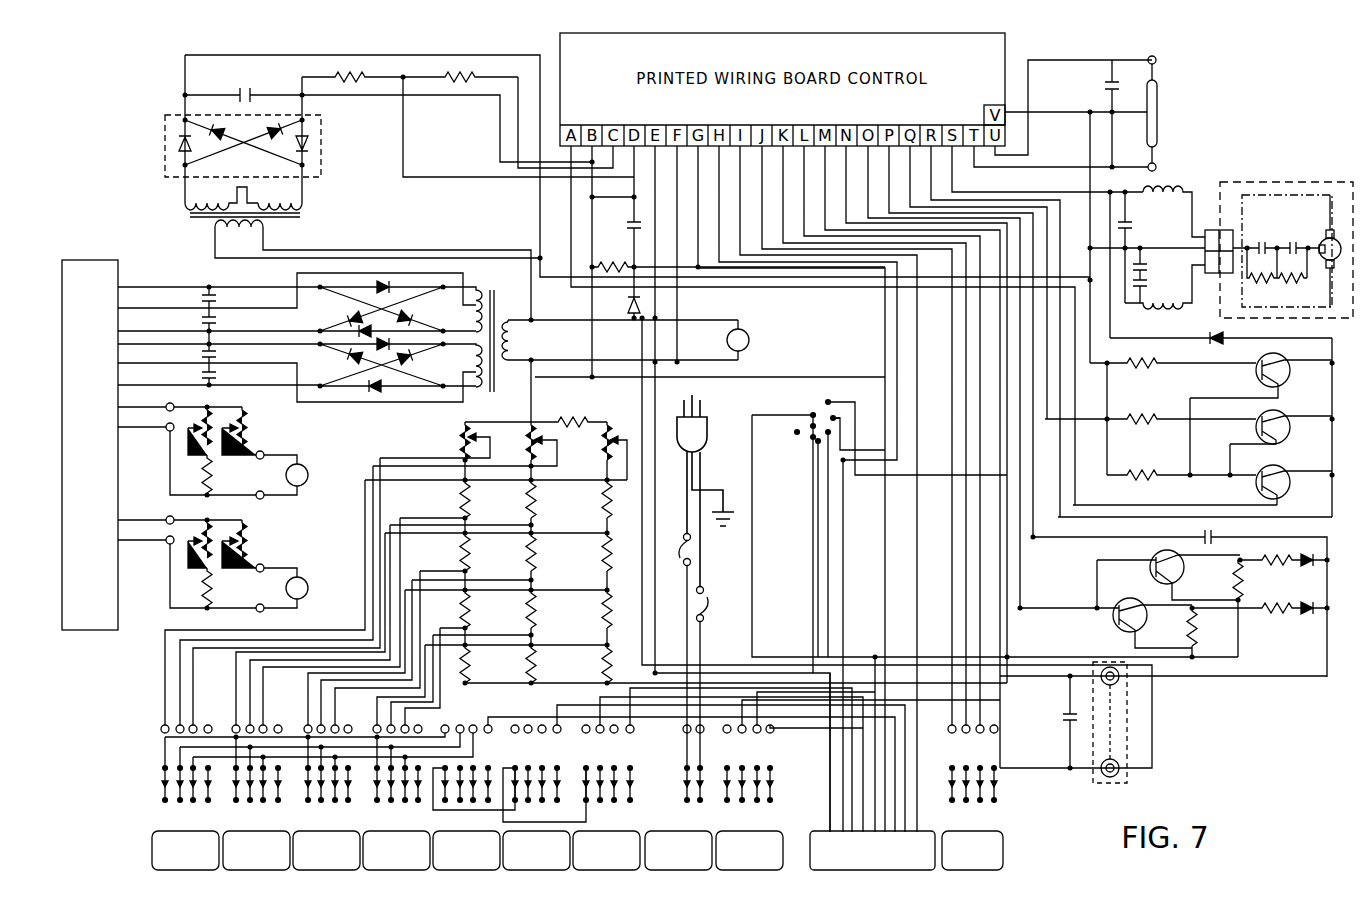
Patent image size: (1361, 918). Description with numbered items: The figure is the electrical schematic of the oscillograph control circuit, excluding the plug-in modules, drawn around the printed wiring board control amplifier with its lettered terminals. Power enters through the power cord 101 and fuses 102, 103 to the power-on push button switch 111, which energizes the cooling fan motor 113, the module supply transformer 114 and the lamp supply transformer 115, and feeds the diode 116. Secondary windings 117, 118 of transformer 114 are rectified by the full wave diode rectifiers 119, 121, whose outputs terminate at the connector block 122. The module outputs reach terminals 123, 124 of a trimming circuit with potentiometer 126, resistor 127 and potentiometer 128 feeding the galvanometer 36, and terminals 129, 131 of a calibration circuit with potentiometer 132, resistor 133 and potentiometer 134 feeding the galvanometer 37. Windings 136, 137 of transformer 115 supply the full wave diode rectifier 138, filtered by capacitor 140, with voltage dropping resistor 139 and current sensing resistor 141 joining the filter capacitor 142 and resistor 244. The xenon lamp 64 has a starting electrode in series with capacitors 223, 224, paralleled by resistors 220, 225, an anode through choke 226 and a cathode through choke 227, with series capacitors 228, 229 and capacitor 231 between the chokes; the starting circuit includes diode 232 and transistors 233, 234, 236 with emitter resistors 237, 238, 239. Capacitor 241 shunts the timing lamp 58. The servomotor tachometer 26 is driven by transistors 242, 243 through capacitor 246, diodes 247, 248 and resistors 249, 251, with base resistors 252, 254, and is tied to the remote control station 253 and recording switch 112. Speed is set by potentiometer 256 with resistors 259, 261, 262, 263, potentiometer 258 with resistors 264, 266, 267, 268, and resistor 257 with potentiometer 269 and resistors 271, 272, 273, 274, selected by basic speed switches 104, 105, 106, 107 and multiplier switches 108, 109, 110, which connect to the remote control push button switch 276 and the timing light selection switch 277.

The servomotor tachometer 26 is at (1130, 696).
The galvanometer 36 is at (306, 468).
The galvanometer 37 is at (306, 581).
The timing lamp 58 is at (1158, 100).
The xenon lamp 64 is at (1326, 236).
The power cord 101 is at (708, 427).
The fuse 102 is at (684, 534).
The fuse 103 is at (706, 612).
The push button switch 104 is at (171, 863).
The push button switch 105 is at (242, 863).
The push button switch 106 is at (312, 863).
The push button switch 107 is at (382, 863).
The push button switch 108 is at (452, 863).
The push button switch 109 is at (522, 863).
The push button switch 110 is at (592, 863).
The push button switch 111 is at (664, 863).
The push button switch 112 is at (735, 863).
The cooling fan motor 113 is at (749, 338).
The module supply transformer 114 is at (504, 362).
The lamp supply transformer 115 is at (275, 222).
The diode 116 is at (627, 301).
The secondary winding 117 is at (478, 288).
The secondary winding 118 is at (480, 398).
The full wave diode rectifier 119 is at (346, 314).
The full wave diode rectifier 121 is at (346, 368).
The block representing pair of connectors 122 is at (78, 460).
The terminal 123 is at (166, 404).
The terminal 124 is at (166, 430).
The potentiometer 126 is at (212, 420).
The resistor 127 is at (214, 470).
The potentiometer 128 is at (250, 418).
The terminal 129 is at (166, 517).
The terminal 131 is at (166, 543).
The potentiometer 132 is at (212, 533).
The resistor 133 is at (214, 583).
The potentiometer 134 is at (250, 531).
The secondary winding 136 is at (296, 204).
The secondary winding 137 is at (190, 204).
The full wave diode rectifier 138 is at (322, 135).
The resistor 139 is at (368, 78).
The filter capacitor 140 is at (245, 90).
The resistor 141 is at (477, 78).
The filter capacitor 142 is at (628, 224).
The resistor 220 is at (1298, 278).
The capacitor 223 is at (1294, 240).
The capacitor 224 is at (1262, 242).
The resistor 225 is at (1252, 278).
The choke 226 is at (1165, 190).
The choke 227 is at (1165, 312).
The capacitor 228 is at (1147, 265).
The capacitor 229 is at (1147, 283).
The capacitor 231 is at (1134, 225).
The diode 232 is at (1211, 342).
The transistor 233 is at (1256, 386).
The transistor 234 is at (1256, 440).
The transistor 236 is at (1282, 497).
The resistor 237 is at (1152, 370).
The resistor 238 is at (1152, 424).
The resistor 239 is at (1152, 480).
The capacitor 241 is at (1103, 88).
The transistor 242 is at (1152, 550).
The transistor 243 is at (1138, 598).
The resistor 244 is at (614, 264).
The capacitor 246 is at (1212, 533).
The diode 247 is at (1300, 570).
The diode 248 is at (1302, 618).
The resistor 249 is at (1289, 566).
The resistor 251 is at (1285, 618).
The resistor 252 is at (1234, 580).
The remote control station 253 is at (857, 863).
The resistor 254 is at (1188, 624).
The potentiometer 256 is at (456, 434).
The resistor 257 is at (574, 420).
The potentiometer 258 is at (544, 434).
The resistor 259 is at (472, 499).
The resistor 261 is at (472, 554).
The resistor 262 is at (472, 611).
The resistor 263 is at (472, 666).
The resistor 264 is at (538, 487).
The resistor 266 is at (538, 542).
The resistor 267 is at (538, 599).
The resistor 268 is at (538, 654).
The potentiometer 269 is at (604, 456).
The resistor 271 is at (603, 510).
The resistor 272 is at (603, 563).
The resistor 273 is at (603, 618).
The resistor 274 is at (603, 673).
The remote control push button switch 276 is at (957, 863).
The timing light selection switch 277 is at (820, 413).